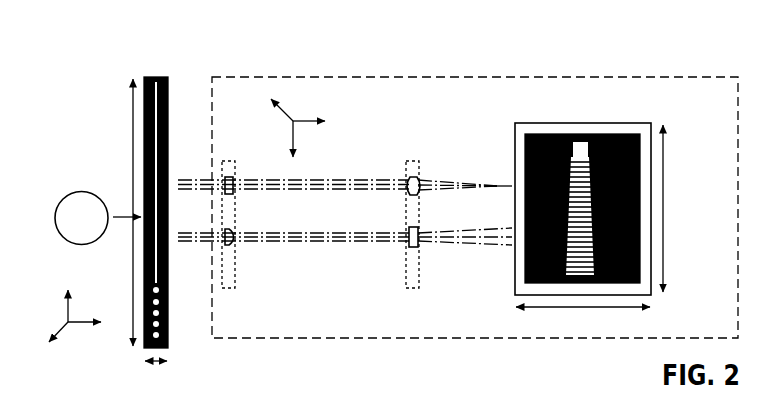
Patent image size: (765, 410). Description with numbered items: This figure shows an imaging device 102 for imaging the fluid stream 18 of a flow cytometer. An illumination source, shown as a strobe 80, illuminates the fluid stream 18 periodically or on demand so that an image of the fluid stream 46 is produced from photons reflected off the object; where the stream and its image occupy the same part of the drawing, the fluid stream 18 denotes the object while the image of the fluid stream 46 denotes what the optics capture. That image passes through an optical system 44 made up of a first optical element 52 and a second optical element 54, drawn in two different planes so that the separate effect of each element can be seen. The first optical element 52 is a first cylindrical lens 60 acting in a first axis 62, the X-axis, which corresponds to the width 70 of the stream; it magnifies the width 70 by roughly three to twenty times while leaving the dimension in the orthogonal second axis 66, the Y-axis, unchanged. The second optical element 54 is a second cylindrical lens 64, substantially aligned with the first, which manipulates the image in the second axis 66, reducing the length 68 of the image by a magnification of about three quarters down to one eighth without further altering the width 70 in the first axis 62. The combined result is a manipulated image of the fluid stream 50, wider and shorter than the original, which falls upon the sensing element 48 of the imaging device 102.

The fluid stream 18 is at (183, 179).
The image of the fluid stream 46 is at (168, 97).
The strobe 80 is at (73, 207).
The length 68 is at (397, 212).
The width 70 is at (397, 350).
The second axis 66 is at (180, 221).
The first axis 62 is at (188, 220).
The optical system 44 is at (405, 222).
The first optical element 52 is at (282, 161).
The first cylindrical lens 60 is at (232, 160).
The second optical element 54 is at (448, 200).
The second cylindrical lens 64 is at (412, 160).
The sensing element 48 is at (618, 188).
The manipulated image of the fluid stream 50 is at (607, 134).
The imaging device 102 is at (475, 207).